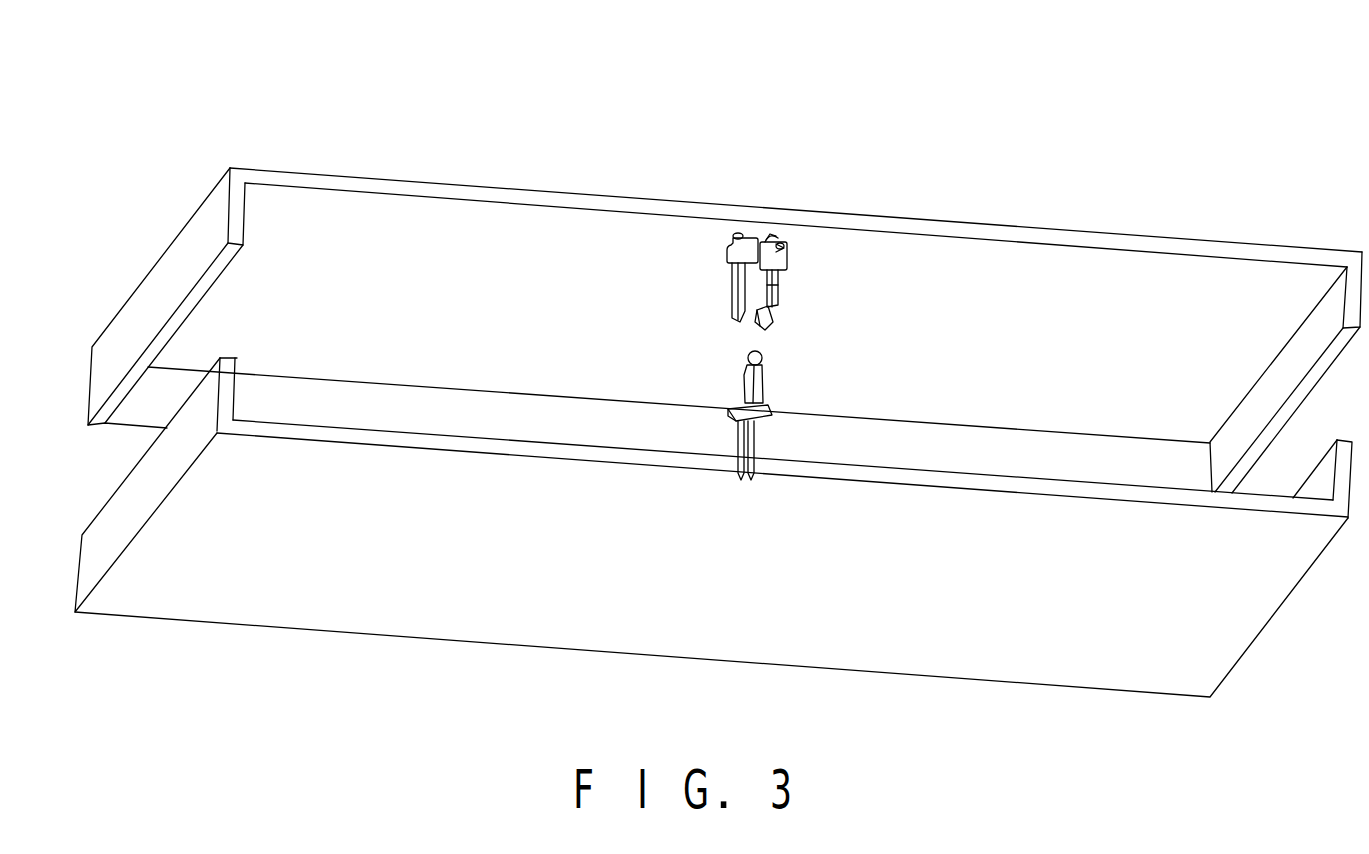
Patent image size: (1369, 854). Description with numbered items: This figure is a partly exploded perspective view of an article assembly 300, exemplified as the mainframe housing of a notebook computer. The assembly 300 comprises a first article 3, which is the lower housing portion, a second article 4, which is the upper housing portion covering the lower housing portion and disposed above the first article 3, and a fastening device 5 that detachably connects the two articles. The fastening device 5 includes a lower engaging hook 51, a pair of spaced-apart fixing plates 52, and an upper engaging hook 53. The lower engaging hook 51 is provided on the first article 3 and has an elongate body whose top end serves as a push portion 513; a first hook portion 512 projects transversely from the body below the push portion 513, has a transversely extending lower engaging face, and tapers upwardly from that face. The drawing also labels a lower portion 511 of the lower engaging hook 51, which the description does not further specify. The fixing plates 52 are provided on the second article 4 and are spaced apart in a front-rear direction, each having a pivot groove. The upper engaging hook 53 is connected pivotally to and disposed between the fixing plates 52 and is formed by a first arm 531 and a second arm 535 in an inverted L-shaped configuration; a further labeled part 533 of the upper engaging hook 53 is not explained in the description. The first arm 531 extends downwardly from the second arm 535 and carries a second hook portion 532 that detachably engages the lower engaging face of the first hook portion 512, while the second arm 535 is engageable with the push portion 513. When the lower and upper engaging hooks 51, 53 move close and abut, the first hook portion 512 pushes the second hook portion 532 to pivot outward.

The article assembly 300 is at (328, 155).
The first article 3 is at (1030, 690).
The second article 4 is at (1015, 218).
The fastening device 5 is at (700, 298).
The lower engaging hook 51 is at (725, 427).
The soldering legs of first terminal 511 is at (753, 437).
The first hook portion 512 is at (770, 406).
The push portion 513 is at (765, 362).
The fixing plates 52 is at (735, 241).
The upper engaging hook 53 is at (727, 302).
The first arm 531 is at (770, 290).
The second hook portion 532 is at (773, 314).
The contact portion of second terminal 533 is at (782, 249).
The second arm 535 is at (772, 232).